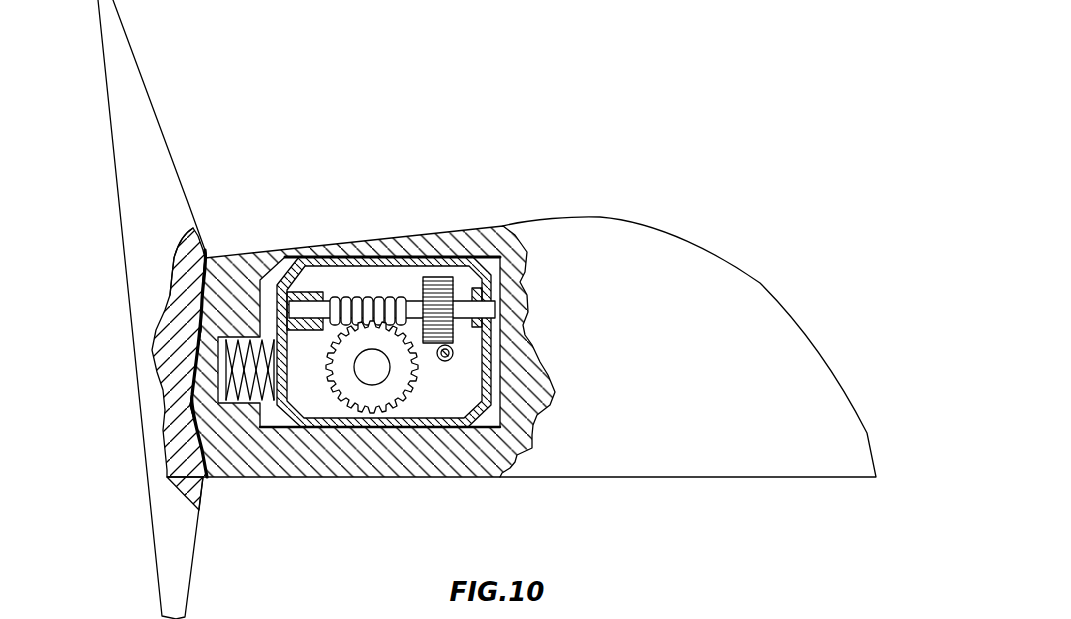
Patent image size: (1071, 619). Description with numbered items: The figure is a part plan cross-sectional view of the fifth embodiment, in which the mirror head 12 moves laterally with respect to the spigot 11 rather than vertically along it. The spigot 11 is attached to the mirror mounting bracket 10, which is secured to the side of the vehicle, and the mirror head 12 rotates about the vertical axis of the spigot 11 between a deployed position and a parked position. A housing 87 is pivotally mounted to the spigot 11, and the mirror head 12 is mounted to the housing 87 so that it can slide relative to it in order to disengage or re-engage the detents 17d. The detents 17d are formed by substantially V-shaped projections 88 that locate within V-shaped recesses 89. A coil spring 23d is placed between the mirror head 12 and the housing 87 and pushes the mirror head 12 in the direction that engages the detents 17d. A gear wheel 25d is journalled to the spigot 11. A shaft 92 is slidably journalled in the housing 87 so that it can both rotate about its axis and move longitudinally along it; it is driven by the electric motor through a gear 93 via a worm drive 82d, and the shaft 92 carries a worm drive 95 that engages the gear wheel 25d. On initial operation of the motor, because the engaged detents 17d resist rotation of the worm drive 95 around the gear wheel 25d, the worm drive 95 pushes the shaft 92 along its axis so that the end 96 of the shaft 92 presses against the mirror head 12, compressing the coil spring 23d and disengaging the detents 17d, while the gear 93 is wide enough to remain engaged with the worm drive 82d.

The mirror mounting bracket 10 is at (152, 532).
The mirror head 12 is at (636, 450).
The V-shaped projections 88 is at (228, 257).
The detent 17d is at (186, 280).
The V-shaped recesses 89 is at (176, 266).
The coil spring 23d is at (218, 372).
The housing 87 is at (485, 366).
The end of the shaft 96 is at (479, 312).
The worm drive 95 is at (350, 296).
The shaft 92 is at (383, 290).
The gear 93 is at (434, 280).
The worm drive 82d is at (452, 360).
The gear wheel 25d is at (347, 402).
The spigot 11 is at (386, 384).